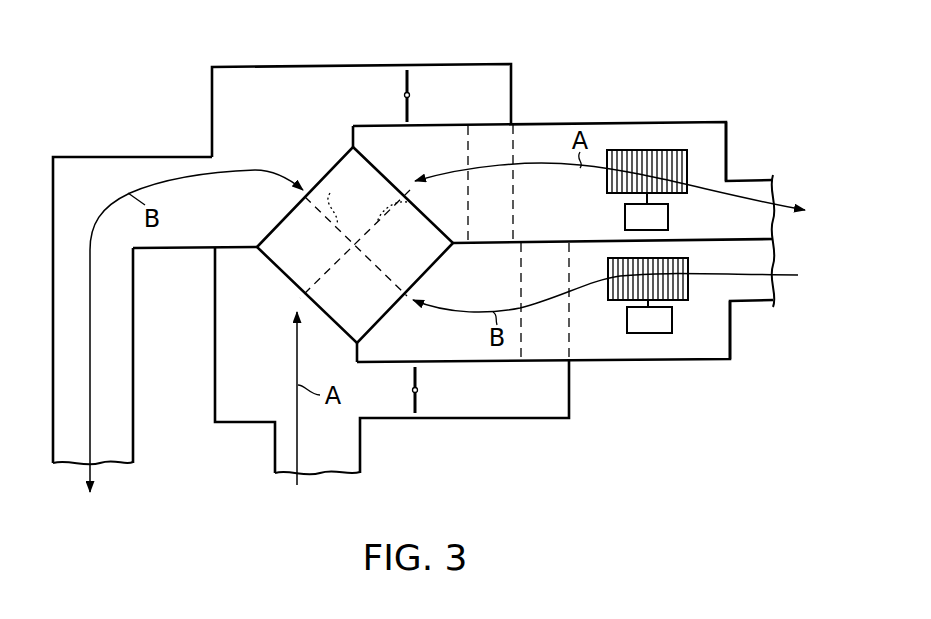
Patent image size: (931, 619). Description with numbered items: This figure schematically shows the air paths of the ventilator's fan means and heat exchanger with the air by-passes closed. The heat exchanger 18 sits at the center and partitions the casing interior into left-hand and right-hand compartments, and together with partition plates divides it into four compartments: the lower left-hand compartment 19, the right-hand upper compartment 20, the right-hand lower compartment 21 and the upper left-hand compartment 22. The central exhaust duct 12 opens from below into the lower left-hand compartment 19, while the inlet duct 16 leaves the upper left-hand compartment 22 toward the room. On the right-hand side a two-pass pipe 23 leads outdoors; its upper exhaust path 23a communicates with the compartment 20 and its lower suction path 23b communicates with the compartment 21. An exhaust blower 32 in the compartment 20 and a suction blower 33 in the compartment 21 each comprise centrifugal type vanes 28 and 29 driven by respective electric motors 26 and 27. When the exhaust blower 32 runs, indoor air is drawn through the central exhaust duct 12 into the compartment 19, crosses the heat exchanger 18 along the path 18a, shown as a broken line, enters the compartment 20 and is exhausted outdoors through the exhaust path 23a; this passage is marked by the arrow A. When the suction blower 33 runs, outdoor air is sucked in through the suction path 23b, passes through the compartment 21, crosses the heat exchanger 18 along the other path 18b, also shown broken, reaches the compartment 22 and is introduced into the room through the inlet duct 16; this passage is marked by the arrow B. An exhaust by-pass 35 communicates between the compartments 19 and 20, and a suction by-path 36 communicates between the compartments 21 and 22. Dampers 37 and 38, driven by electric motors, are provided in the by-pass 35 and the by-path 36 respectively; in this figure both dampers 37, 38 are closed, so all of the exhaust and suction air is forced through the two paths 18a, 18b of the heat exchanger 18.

The central exhaust duct 12 is at (343, 460).
The inlet duct 16 is at (68, 460).
The heat exchanger 18 is at (337, 157).
The path of the heat exchanger 18a is at (416, 199).
The other path of the heat exchanger 18b is at (356, 236).
The lower left-hand compartment 19 is at (215, 400).
The right-hand upper compartment 20 is at (657, 131).
The right-hand lower compartment 21 is at (677, 360).
The upper left-hand compartment 22 is at (286, 75).
The two-pass pipe 23 is at (765, 178).
The upper exhaust path 23a is at (768, 222).
The lower suction path 23b is at (773, 295).
The electric motor 26 is at (668, 218).
The electric motor 27 is at (633, 335).
The centrifugal type vanes 28 is at (688, 158).
The centrifugal type vanes 29 is at (686, 300).
The exhaust blower 32 is at (706, 163).
The suction blower 33 is at (677, 333).
The exhaust by-pass 35 is at (492, 412).
The suction by-path 36 is at (490, 82).
The damper 37 is at (418, 415).
The damper 38 is at (409, 80).